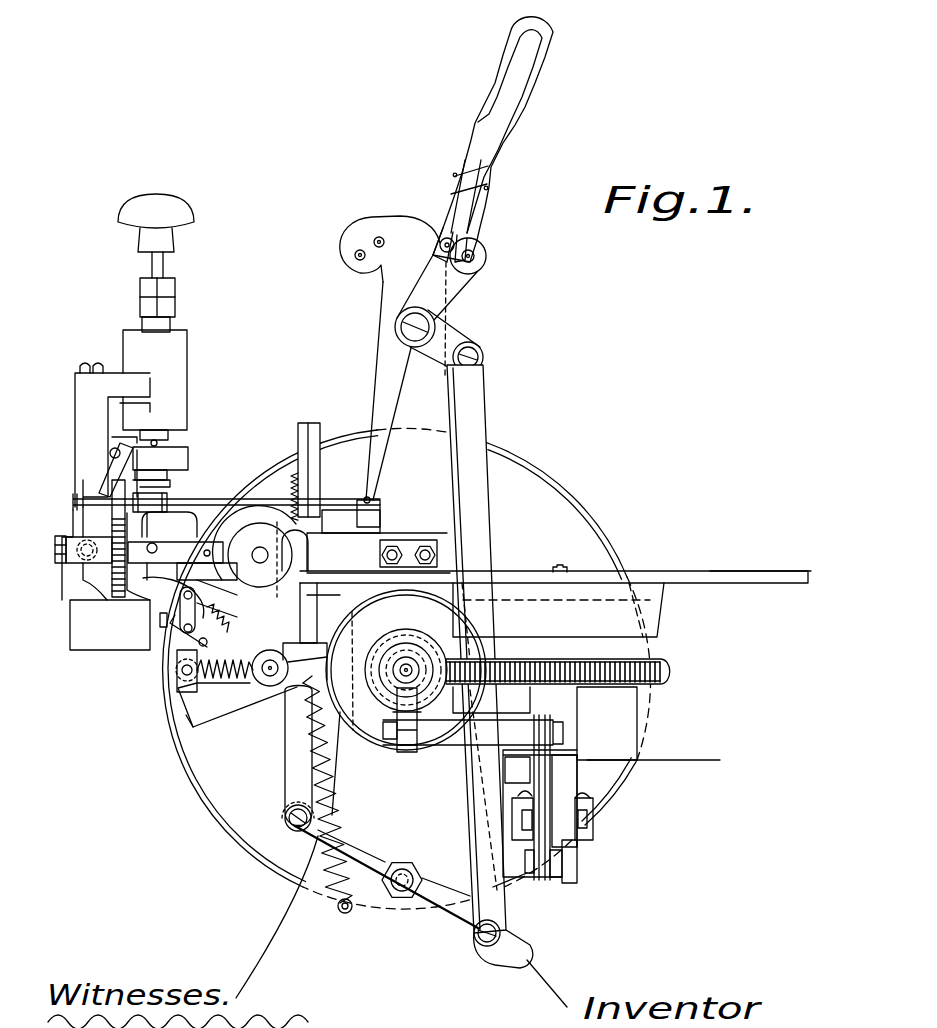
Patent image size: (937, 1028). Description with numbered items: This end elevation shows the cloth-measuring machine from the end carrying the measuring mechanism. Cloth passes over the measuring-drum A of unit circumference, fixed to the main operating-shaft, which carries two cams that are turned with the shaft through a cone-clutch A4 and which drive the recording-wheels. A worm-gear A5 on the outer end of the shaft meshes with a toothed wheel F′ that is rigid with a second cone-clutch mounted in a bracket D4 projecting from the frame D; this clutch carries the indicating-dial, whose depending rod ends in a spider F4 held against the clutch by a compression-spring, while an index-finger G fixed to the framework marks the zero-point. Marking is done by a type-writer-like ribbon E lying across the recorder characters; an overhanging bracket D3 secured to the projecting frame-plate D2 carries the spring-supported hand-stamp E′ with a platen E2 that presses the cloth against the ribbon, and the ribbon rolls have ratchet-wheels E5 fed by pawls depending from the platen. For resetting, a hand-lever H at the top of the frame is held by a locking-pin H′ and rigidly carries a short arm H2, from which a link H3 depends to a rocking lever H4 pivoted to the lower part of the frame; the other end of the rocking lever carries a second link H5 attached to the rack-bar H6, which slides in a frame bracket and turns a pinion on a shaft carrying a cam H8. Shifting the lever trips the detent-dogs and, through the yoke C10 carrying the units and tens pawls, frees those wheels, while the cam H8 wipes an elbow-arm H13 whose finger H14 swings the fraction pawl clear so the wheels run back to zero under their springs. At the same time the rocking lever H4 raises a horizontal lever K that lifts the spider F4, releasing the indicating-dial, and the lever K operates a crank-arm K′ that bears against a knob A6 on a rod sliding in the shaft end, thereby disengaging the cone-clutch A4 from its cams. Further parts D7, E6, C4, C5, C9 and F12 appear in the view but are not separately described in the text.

The measuring-drum A is at (572, 490).
The cone-clutch A4 is at (406, 670).
The worm-gear A5 is at (430, 645).
The knob A6 is at (392, 687).
The frame D is at (325, 855).
The projecting frame-plate D2 is at (77, 431).
The overhanging bracket D3 is at (119, 382).
The bracket D4 is at (638, 713).
The horizontal bar D7 is at (430, 577).
The ribbon E is at (166, 498).
The hand-stamp E′ is at (168, 438).
The platen E2 is at (172, 470).
The ratchet-wheels E5 is at (120, 568).
The lever E6 is at (104, 485).
The lever C4 is at (240, 690).
The block C5 is at (185, 658).
The spring C9 is at (226, 630).
The yoke C10 is at (215, 613).
The toothed wheel F′ is at (709, 573).
The block F12 is at (655, 650).
The spider F4 is at (570, 840).
The index-finger G is at (561, 555).
The hand-lever H is at (482, 164).
The locking-pin H′ is at (470, 241).
The short arm H2 is at (440, 344).
The link H3 is at (476, 409).
The rocking lever H4 is at (411, 895).
The second link H5 is at (292, 776).
The rack-bar H6 is at (312, 470).
The cam H8 is at (245, 518).
The elbow-arm H13 is at (300, 551).
The finger H14 is at (197, 713).
The lever K is at (550, 882).
The crank-arm K′ is at (396, 749).